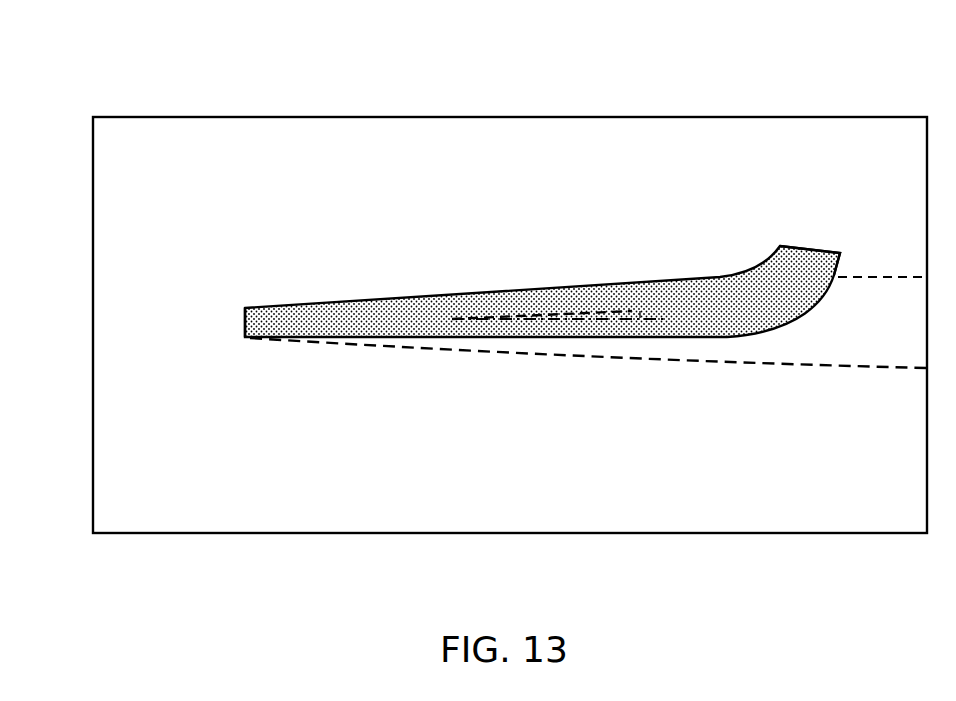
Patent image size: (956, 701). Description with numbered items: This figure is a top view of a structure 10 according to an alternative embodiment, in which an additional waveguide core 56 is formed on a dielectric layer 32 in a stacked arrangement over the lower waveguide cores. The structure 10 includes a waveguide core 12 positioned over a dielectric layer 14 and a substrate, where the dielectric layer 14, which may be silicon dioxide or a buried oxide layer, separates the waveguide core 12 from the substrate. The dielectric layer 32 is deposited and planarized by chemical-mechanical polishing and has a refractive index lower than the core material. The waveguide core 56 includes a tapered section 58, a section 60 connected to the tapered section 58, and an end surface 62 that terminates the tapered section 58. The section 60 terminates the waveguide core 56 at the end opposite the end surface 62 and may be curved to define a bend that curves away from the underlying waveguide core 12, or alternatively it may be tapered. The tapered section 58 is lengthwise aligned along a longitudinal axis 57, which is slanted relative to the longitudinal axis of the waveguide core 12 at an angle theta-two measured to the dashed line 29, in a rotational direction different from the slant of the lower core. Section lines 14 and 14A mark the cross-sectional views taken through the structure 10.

The structure 10 is at (132, 72).
The waveguide core 12 is at (862, 310).
The dielectric layer 14 is at (365, 60).
The section line 14A is at (633, 60).
The dashed line 29 is at (608, 322).
The dielectric layer 32 is at (147, 455).
The waveguide core 56 is at (408, 256).
The longitudinal axis 57 is at (548, 315).
The tapered section 58 is at (385, 323).
The section 60 is at (787, 278).
The end surface 62 is at (245, 315).